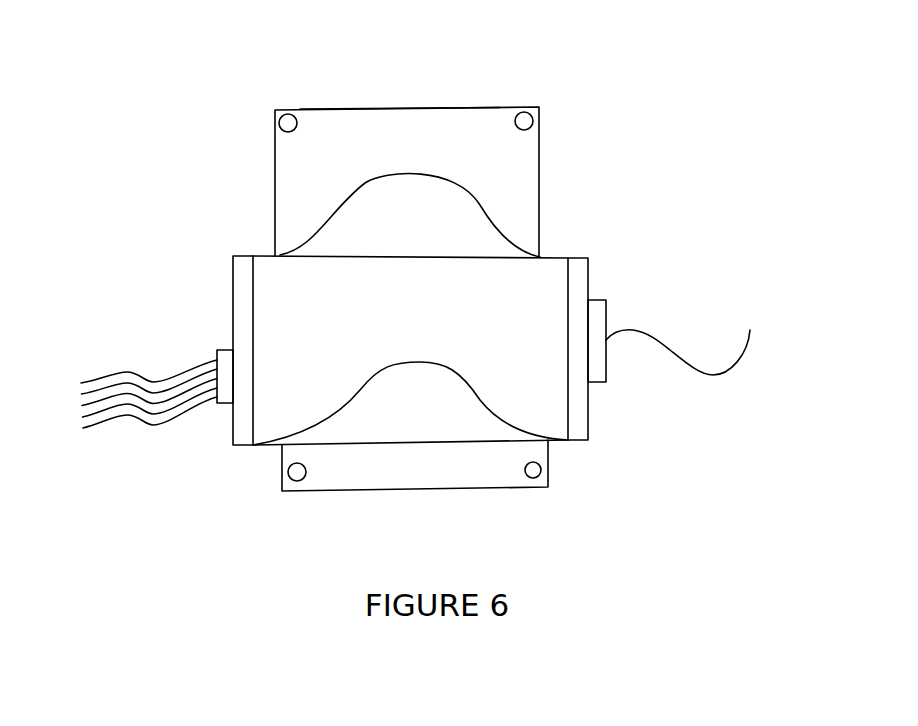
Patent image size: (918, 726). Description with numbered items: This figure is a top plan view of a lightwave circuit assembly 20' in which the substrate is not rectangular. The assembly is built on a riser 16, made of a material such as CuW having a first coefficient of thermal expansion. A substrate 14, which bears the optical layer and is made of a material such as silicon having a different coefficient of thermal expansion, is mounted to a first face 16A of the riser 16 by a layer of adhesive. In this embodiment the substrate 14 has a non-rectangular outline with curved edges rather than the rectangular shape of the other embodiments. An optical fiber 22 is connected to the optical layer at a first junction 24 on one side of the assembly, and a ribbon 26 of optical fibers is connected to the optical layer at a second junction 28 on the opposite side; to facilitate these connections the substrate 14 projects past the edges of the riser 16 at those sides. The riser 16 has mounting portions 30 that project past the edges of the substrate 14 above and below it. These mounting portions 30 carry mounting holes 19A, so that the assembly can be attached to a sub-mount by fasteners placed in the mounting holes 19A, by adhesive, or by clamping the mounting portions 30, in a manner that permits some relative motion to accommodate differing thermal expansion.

The substrate 14 is at (280, 250).
The riser 16 is at (268, 112).
The first face of riser 16A is at (377, 109).
The mounting holes 19A is at (533, 478).
The lightwave circuit assembly 20' is at (623, 47).
The optical fiber 22 is at (667, 348).
The first junction 24 is at (583, 447).
The ribbon of optical fibers 26 is at (127, 371).
The second junction 28 is at (228, 407).
The mounting portions 30 is at (462, 102).